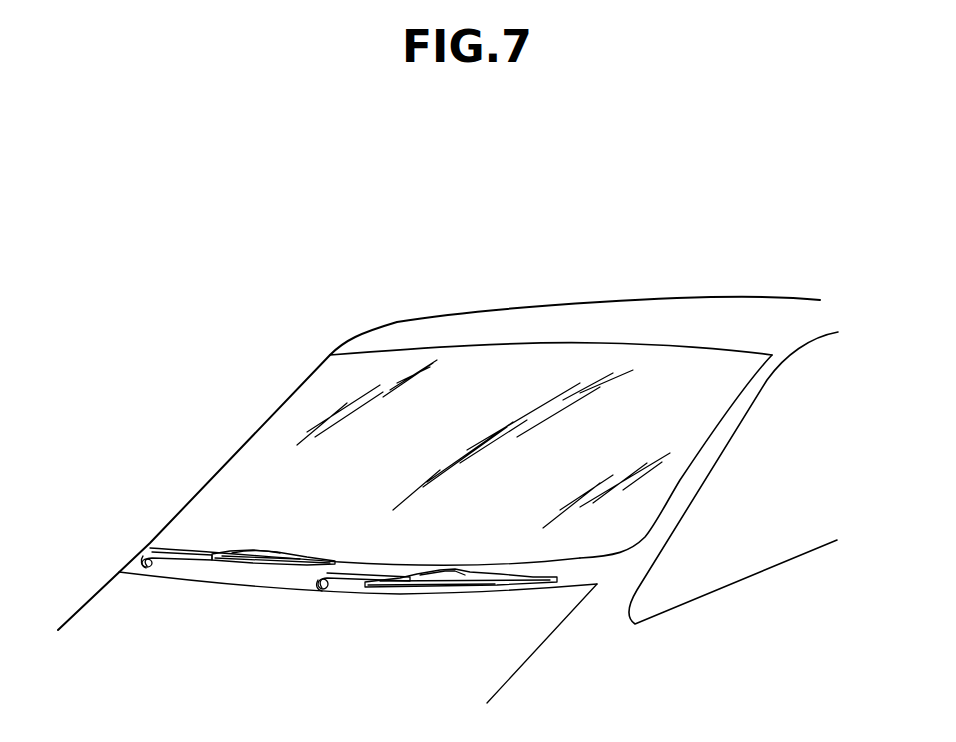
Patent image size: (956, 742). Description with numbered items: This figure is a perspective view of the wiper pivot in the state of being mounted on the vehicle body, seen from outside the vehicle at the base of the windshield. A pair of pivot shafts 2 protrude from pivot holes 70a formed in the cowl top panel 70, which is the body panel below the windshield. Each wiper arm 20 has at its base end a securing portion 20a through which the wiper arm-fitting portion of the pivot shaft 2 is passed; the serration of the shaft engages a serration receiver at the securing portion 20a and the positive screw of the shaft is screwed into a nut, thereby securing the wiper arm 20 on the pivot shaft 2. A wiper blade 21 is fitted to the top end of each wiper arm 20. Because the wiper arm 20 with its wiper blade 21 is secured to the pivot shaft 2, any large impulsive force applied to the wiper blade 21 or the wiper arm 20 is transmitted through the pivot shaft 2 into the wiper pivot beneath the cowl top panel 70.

The pivot shaft 2 is at (143, 556).
The wiper arm 20 is at (210, 552).
The securing portion 20a is at (143, 548).
The wiper blade 21 is at (338, 563).
The cowl top panel 70 is at (278, 580).
The pivot hole 70a is at (150, 577).